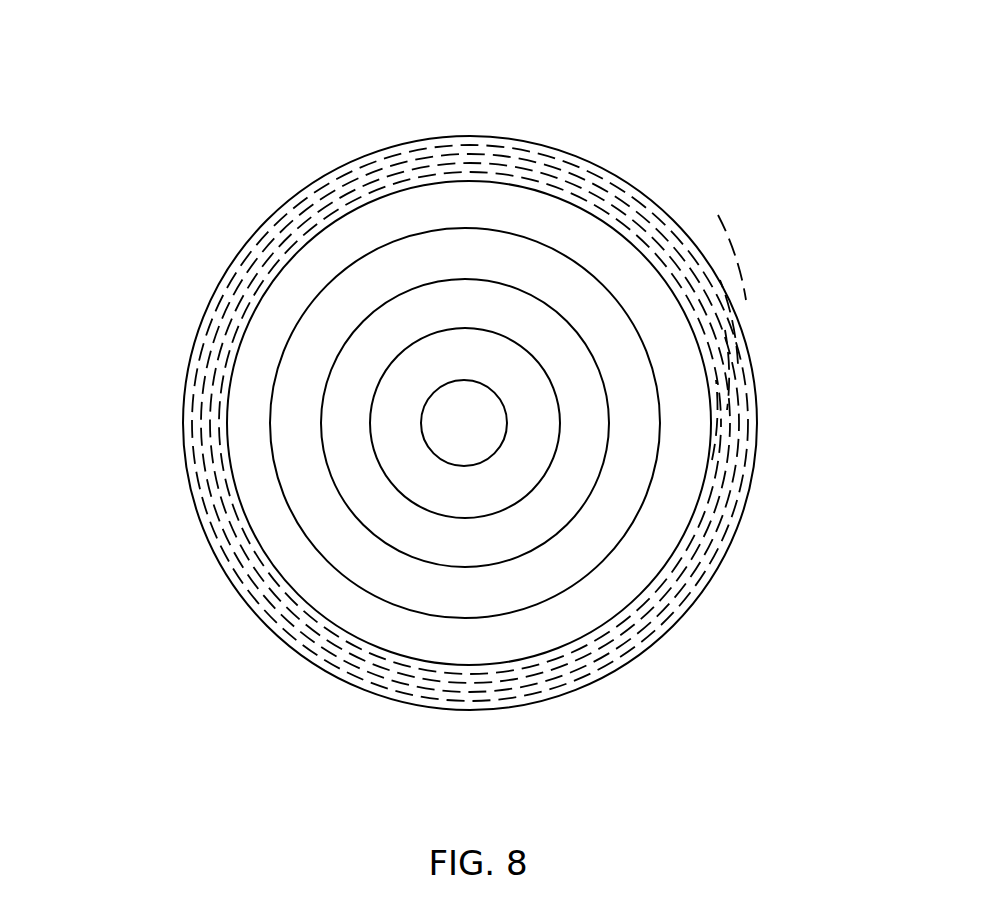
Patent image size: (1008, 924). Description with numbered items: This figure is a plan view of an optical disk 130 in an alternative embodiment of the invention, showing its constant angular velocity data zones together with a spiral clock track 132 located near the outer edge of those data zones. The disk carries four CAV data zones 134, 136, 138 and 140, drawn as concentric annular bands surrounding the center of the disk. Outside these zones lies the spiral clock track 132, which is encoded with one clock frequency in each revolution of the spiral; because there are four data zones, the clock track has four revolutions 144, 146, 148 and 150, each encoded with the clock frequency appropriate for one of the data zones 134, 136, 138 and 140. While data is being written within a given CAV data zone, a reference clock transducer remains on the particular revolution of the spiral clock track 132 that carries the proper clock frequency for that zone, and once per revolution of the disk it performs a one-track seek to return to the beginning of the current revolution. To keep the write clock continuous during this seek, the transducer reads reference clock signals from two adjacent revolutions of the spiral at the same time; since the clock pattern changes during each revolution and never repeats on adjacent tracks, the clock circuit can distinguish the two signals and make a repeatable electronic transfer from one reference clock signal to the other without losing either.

The optical disk 130 is at (770, 68).
The spiral clock track 132 is at (510, 173).
The CAV data zone 134 is at (267, 328).
The CAV data zone 136 is at (314, 360).
The CAV data zone 138 is at (347, 398).
The CAV data zone 140 is at (394, 435).
The revolution of the spiral clock track 144 is at (722, 303).
The revolution of the spiral clock track 146 is at (732, 357).
The revolution of the spiral clock track 148 is at (728, 402).
The revolution of the spiral clock track 150 is at (718, 443).